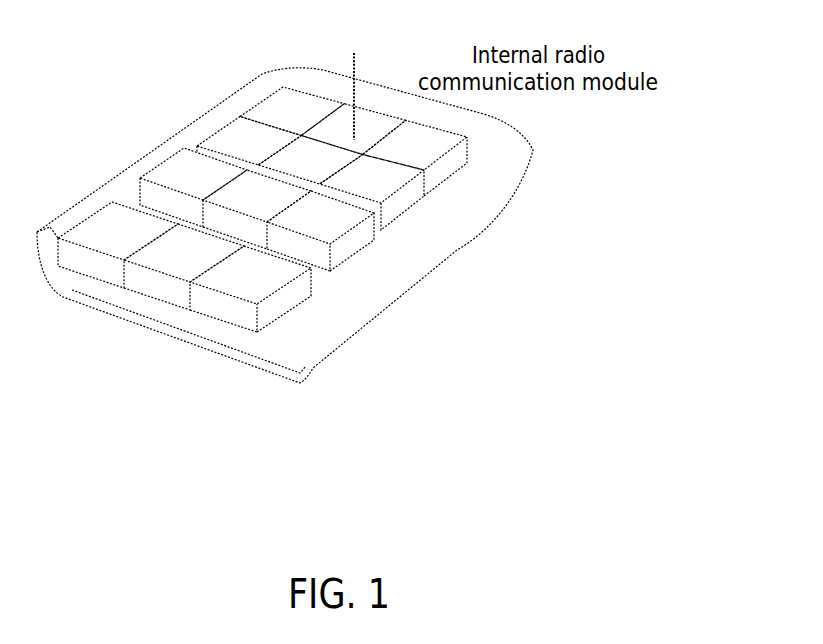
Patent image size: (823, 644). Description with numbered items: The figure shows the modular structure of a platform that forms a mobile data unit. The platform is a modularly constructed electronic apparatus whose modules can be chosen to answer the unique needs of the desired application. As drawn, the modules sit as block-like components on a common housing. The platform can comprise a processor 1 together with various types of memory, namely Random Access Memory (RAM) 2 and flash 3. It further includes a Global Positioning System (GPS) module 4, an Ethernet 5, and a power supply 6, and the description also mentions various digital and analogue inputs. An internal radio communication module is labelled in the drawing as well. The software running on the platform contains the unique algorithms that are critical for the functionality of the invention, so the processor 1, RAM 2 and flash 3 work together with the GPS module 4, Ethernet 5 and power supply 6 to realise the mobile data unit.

The processor 1 is at (370, 180).
The Random Access Memory (RAM) 2 is at (325, 225).
The flash 3 is at (238, 277).
The Global Positioning System (GPS) module 4 is at (170, 173).
The Ethernet 5 is at (172, 258).
The power supply 6 is at (420, 145).